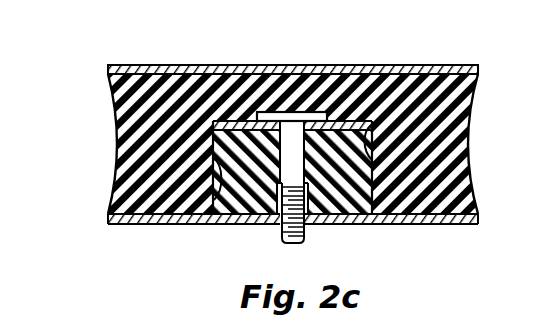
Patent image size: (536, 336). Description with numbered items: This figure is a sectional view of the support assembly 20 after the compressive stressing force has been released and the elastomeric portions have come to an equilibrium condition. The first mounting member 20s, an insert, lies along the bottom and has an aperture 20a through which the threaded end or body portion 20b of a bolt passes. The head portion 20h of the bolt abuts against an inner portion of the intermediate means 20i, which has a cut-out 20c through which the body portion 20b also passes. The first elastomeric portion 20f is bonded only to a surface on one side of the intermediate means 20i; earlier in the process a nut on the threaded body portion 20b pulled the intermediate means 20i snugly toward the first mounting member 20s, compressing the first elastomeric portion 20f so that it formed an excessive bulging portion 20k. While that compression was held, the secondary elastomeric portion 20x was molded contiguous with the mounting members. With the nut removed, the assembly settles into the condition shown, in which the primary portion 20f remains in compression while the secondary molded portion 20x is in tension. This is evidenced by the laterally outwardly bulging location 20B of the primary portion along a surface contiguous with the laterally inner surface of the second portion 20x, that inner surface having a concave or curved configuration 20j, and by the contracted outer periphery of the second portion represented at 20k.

The support assembly 20 is at (265, 159).
The bulging portion 20k is at (118, 157).
The secondary elastomeric portion 20x is at (150, 188).
The concave or curved configuration 20j is at (200, 195).
The laterally outwardly bulging location 20B is at (221, 197).
The aperture 20a is at (280, 222).
The threaded end or body portion of bolt 20b is at (305, 200).
The first elastomeric portion 20f is at (353, 200).
The first mounting member 20s is at (437, 222).
The head portion of bolt 20h is at (266, 114).
The cut-out 20c is at (301, 112).
The intermediate means 20i is at (353, 122).